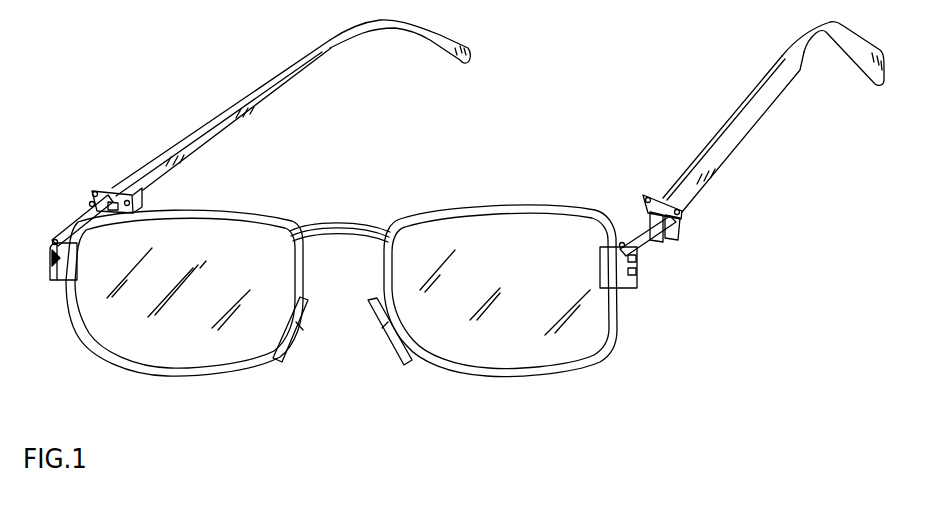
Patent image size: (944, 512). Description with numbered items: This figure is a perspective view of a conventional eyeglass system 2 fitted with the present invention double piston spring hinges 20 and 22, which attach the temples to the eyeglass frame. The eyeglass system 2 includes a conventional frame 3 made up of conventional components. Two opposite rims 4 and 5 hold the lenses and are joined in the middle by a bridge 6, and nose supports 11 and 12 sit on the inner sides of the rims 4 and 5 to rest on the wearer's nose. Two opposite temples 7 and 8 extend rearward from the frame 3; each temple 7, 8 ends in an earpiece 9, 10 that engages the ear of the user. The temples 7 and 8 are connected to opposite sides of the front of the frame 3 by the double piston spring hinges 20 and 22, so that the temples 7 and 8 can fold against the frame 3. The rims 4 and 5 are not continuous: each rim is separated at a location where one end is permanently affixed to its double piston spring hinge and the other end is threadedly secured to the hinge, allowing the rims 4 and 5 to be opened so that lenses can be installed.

The eyeglass system 2 is at (529, 421).
The frame 3 is at (422, 210).
The rim 4 is at (563, 367).
The rim 5 is at (185, 370).
The bridge 6 is at (330, 233).
The temple 7 is at (747, 128).
The temple 8 is at (267, 103).
The earpiece 9 is at (860, 50).
The earpiece 10 is at (453, 33).
The nose support 11 is at (393, 343).
The nose support 12 is at (293, 337).
The double piston spring hinge 20 is at (657, 267).
The double piston spring hinge 22 is at (64, 215).